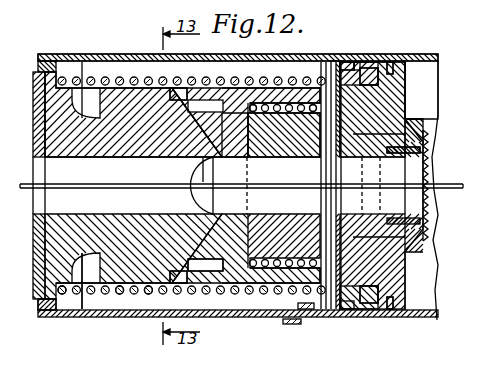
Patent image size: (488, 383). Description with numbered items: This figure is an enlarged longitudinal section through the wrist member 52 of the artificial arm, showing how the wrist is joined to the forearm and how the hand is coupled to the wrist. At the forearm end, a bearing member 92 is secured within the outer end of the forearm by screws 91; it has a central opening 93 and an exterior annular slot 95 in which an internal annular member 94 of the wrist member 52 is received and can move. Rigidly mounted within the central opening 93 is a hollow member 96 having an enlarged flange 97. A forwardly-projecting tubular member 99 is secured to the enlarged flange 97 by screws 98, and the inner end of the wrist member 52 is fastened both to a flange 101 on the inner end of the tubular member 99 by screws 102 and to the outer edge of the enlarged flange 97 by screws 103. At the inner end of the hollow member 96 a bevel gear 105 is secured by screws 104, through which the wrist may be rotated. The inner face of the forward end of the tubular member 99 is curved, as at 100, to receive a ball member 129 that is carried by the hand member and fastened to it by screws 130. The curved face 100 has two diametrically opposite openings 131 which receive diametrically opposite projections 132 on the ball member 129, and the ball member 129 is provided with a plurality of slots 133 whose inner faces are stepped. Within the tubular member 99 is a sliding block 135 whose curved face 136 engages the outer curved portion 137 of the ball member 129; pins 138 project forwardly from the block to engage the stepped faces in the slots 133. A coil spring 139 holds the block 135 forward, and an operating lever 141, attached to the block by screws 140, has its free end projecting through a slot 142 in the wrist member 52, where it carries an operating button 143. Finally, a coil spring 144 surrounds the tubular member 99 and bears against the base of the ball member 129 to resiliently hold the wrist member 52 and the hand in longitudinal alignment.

The wrist member 52 is at (120, 49).
The screws 91 is at (390, 60).
The bearing member 92 is at (401, 60).
The central opening 93 is at (388, 126).
The internal annular member 94 is at (366, 62).
The annular slot 95 is at (342, 312).
The hollow member 96 is at (428, 250).
The enlarged flange 97 is at (333, 312).
The screws 98 is at (338, 60).
The tubular member 99 is at (205, 90).
The curved face 100 is at (186, 292).
The flange 101 is at (332, 72).
The screws 102 is at (345, 62).
The screws 103 is at (356, 61).
The screws 104 is at (421, 149).
The bevel gear 105 is at (425, 126).
The ball member 129 is at (118, 294).
The screws 130 is at (43, 317).
The openings 131 is at (142, 285).
The projections 132 is at (149, 294).
The slots 133 is at (164, 88).
The sliding block 135 is at (280, 157).
The curved face 136 is at (238, 157).
The outer curved portion 137 is at (193, 203).
The pins 138 is at (168, 158).
The coil spring 139 is at (298, 308).
The screws 140 is at (246, 290).
The operating lever 141 is at (327, 312).
The slot 142 is at (321, 320).
The operating button 143 is at (295, 325).
The coil spring 144 is at (84, 300).